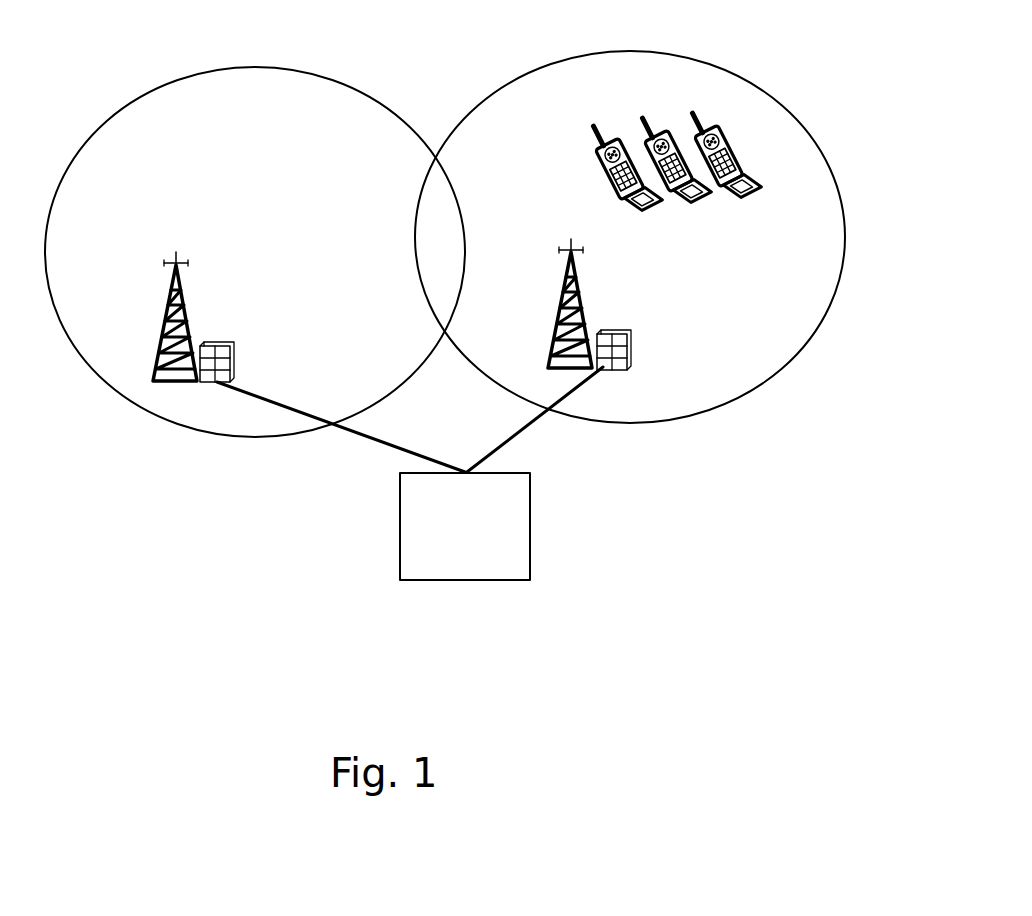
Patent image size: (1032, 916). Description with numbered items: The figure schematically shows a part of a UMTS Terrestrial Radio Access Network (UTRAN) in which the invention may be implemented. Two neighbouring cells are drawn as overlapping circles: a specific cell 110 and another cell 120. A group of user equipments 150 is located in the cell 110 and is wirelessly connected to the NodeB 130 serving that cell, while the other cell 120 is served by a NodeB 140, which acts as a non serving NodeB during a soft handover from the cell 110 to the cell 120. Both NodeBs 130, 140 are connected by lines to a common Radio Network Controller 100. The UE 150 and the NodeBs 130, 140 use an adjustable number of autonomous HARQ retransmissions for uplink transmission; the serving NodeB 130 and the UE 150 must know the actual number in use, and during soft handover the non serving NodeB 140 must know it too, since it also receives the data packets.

The Radio Network Controller 100 is at (440, 562).
The cell 110 is at (532, 113).
The cell 120 is at (135, 123).
The NodeB 130 is at (635, 363).
The non serving NodeB 140 is at (210, 346).
The user equipment 150 is at (727, 142).